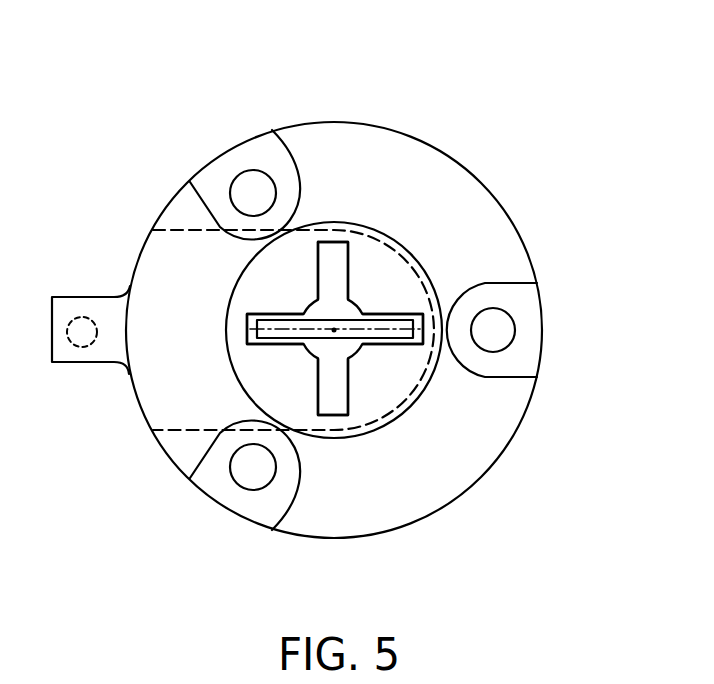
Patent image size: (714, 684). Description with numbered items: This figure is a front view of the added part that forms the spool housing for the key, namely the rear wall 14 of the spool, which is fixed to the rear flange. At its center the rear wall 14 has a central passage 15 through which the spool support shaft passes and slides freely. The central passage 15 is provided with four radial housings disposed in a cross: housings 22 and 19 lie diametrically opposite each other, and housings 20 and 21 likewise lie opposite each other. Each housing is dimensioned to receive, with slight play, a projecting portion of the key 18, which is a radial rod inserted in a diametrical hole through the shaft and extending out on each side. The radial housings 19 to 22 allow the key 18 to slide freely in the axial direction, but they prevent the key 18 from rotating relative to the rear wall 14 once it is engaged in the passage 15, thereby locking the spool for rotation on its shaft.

The rear wall 14 is at (495, 247).
The central passage 15 is at (385, 374).
The key 18 is at (408, 308).
The radial housing 19 is at (267, 313).
The radial housing 20 is at (333, 258).
The radial housing 21 is at (332, 403).
The radial housing 22 is at (372, 310).